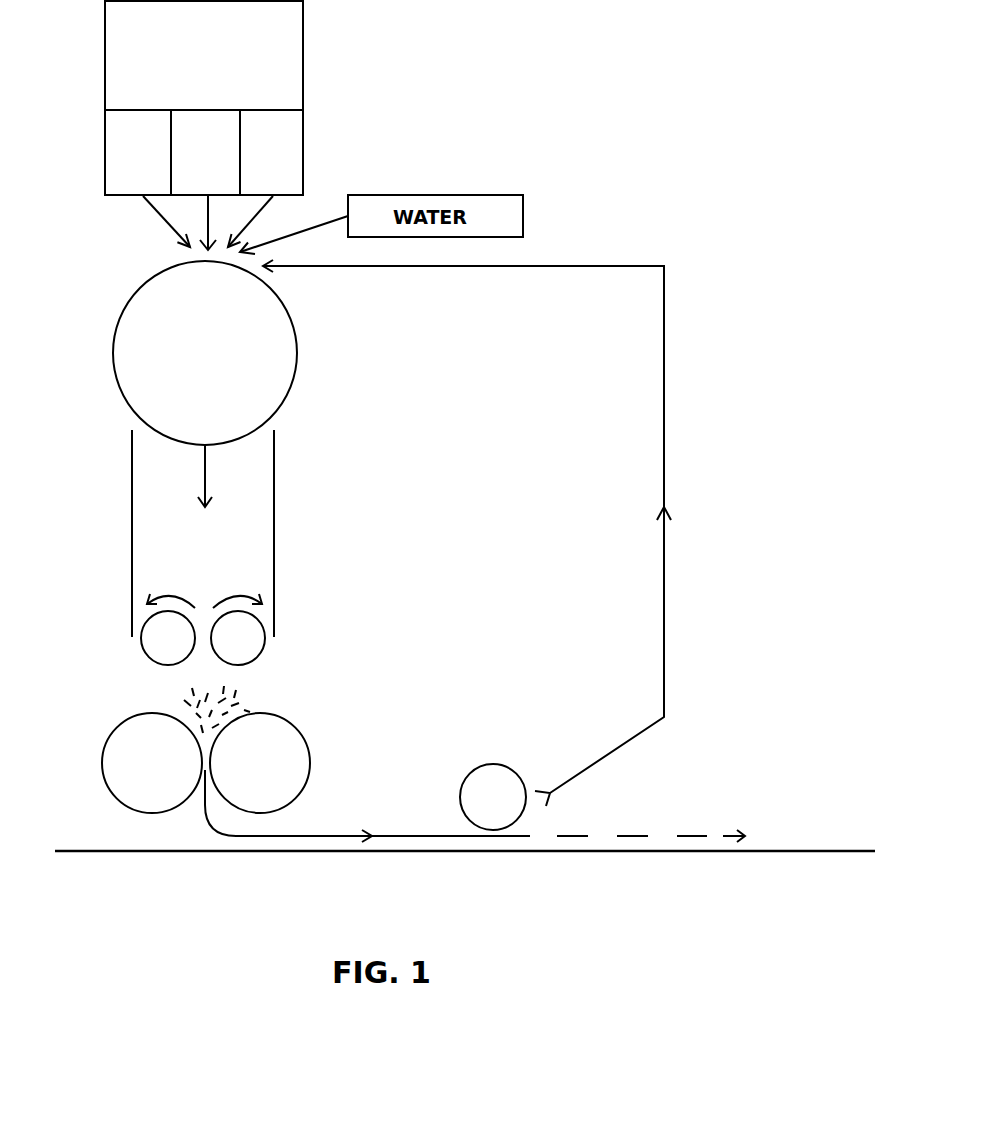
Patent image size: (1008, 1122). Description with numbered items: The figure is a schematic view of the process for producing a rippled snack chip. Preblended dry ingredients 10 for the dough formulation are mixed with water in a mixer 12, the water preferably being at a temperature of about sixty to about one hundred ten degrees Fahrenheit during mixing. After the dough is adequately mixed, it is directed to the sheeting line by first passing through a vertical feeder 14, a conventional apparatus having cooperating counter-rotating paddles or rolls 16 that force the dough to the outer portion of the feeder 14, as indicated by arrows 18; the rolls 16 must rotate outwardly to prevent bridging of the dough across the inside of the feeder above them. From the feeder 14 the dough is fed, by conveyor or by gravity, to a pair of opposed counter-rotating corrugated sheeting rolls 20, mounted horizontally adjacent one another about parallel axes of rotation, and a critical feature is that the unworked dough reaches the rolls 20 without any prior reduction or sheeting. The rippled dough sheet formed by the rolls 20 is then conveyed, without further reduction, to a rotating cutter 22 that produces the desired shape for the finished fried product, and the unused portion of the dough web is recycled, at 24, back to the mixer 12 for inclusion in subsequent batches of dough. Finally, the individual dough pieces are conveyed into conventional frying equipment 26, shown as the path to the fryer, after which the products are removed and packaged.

The preblended dry ingredients 10 is at (208, 79).
The mixer 12 is at (205, 353).
The vertical feeder 14 is at (275, 492).
The counter-rotating paddles or rolls 16 is at (266, 648).
The arrows 18 is at (148, 601).
The corrugated sheeting rolls 20 is at (110, 793).
The rotating cutter 22 is at (472, 768).
The recycle path 24 is at (665, 452).
The frying equipment 26 is at (789, 829).